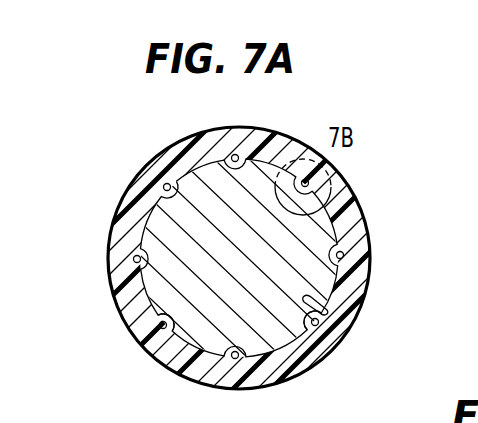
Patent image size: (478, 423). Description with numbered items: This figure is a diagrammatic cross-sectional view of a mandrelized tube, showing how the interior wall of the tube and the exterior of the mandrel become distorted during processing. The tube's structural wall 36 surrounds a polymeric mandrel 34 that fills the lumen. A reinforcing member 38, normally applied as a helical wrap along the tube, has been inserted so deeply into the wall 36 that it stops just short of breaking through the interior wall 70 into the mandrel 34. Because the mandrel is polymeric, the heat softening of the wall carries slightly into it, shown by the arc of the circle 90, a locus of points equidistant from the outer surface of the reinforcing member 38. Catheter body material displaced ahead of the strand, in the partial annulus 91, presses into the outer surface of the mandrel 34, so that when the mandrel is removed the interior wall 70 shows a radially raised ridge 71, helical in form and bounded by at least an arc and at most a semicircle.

The mandrel 34 is at (348, 192).
The wall 36 is at (366, 237).
The reinforcing member 38 is at (162, 333).
The interior wall 70 is at (345, 251).
The raised ridge 71 is at (345, 334).
The arc of the circle 90 is at (165, 178).
The partial annulus 91 is at (133, 256).